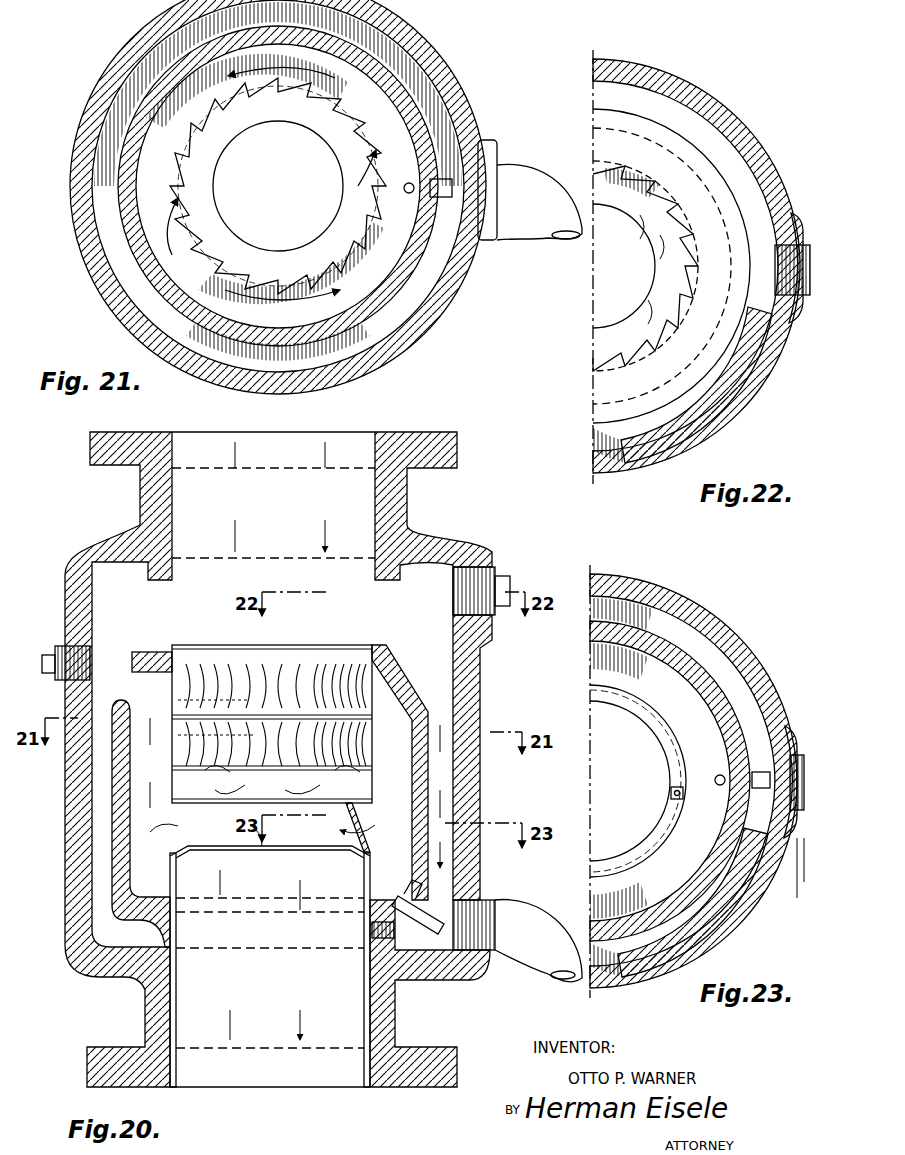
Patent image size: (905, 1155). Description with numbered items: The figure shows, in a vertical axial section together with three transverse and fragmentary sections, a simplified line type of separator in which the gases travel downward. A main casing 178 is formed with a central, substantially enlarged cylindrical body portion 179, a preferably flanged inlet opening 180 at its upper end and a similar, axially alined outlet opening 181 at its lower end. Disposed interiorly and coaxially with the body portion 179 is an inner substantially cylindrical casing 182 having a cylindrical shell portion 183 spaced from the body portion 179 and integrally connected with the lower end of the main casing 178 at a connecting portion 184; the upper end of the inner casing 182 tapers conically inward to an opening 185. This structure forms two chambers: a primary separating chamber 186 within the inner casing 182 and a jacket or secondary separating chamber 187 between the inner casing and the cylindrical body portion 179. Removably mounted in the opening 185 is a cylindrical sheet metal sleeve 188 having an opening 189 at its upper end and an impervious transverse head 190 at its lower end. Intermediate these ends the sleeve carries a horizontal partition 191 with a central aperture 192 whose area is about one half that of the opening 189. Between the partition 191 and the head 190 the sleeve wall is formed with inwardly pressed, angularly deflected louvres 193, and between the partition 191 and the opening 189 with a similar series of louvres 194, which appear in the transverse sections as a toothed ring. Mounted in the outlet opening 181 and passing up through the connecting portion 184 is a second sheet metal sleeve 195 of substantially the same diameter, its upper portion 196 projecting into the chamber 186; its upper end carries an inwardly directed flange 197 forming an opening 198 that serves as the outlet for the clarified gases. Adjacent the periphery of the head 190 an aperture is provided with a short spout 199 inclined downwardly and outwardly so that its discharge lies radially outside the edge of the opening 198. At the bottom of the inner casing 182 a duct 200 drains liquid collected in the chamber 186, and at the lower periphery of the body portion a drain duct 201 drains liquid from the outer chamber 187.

In FIG. 21, the main casing 178 is at (259, 197).
In FIG. 22, the main casing 178 is at (701, 257).
In FIG. 23, the main casing 178 is at (697, 770).
In FIG. 20, the main casing 178 is at (266, 759).
In FIG. 21, the cylindrical body portion 179 is at (78, 246).
In FIG. 22, the cylindrical body portion 179 is at (676, 72).
In FIG. 23, the cylindrical body portion 179 is at (666, 590).
In FIG. 20, the cylindrical body portion 179 is at (76, 792).
In FIG. 20, the inlet opening 180 is at (202, 438).
In FIG. 23, the outlet opening 181 is at (651, 781).
In FIG. 20, the outlet opening 181 is at (394, 1026).
In FIG. 21, the inner casing 182 is at (230, 186).
In FIG. 22, the inner casing 182 is at (689, 254).
In FIG. 23, the inner casing 182 is at (689, 759).
In FIG. 20, the inner casing 182 is at (96, 799).
In FIG. 21, the shell portion 183 is at (128, 116).
In FIG. 22, the shell portion 183 is at (700, 156).
In FIG. 23, the shell portion 183 is at (700, 666).
In FIG. 20, the shell portion 183 is at (114, 842).
In FIG. 20, the connecting portion 184 is at (152, 932).
In FIG. 22, the opening 185 is at (664, 334).
In FIG. 20, the opening 185 is at (384, 656).
In FIG. 21, the primary separating chamber 186 is at (265, 179).
In FIG. 22, the primary separating chamber 186 is at (631, 306).
In FIG. 23, the primary separating chamber 186 is at (619, 781).
In FIG. 20, the primary separating chamber 186 is at (286, 793).
In FIG. 21, the secondary separating chamber 187 is at (404, 72).
In FIG. 22, the secondary separating chamber 187 is at (722, 388).
In FIG. 23, the secondary separating chamber 187 is at (704, 914).
In FIG. 20, the secondary separating chamber 187 is at (458, 770).
In FIG. 21, the sleeve 188 is at (352, 197).
In FIG. 22, the sleeve 188 is at (642, 300).
In FIG. 20, the sleeve 188 is at (276, 710).
In FIG. 22, the opening 189 is at (656, 228).
In FIG. 20, the opening 189 is at (242, 656).
In FIG. 21, the head 190 is at (278, 186).
In FIG. 22, the head 190 is at (596, 290).
In FIG. 20, the head 190 is at (214, 846).
In FIG. 21, the partition 191 is at (216, 146).
In FIG. 22, the partition 191 is at (656, 282).
In FIG. 20, the partition 191 is at (178, 736).
In FIG. 21, the aperture 192 is at (210, 205).
In FIG. 22, the aperture 192 is at (654, 260).
In FIG. 20, the aperture 192 is at (262, 690).
In FIG. 20, the louvres 193 is at (282, 782).
In FIG. 21, the louvres 194 is at (330, 250).
In FIG. 22, the louvres 194 is at (602, 222).
In FIG. 20, the louvres 194 is at (316, 688).
In FIG. 23, the sleeve 195 is at (636, 720).
In FIG. 20, the sleeve 195 is at (270, 966).
In FIG. 23, the upper portion 196 is at (630, 832).
In FIG. 20, the upper portion 196 is at (176, 878).
In FIG. 23, the flange 197 is at (662, 740).
In FIG. 20, the flange 197 is at (360, 862).
In FIG. 23, the opening 198 is at (666, 805).
In FIG. 20, the opening 198 is at (320, 868).
In FIG. 23, the spout 199 is at (678, 786).
In FIG. 20, the spout 199 is at (362, 830).
In FIG. 21, the duct 200 is at (420, 192).
In FIG. 23, the duct 200 is at (752, 790).
In FIG. 20, the duct 200 is at (408, 914).
In FIG. 21, the drain duct 201 is at (548, 170).
In FIG. 23, the drain duct 201 is at (798, 838).
In FIG. 20, the drain duct 201 is at (540, 922).